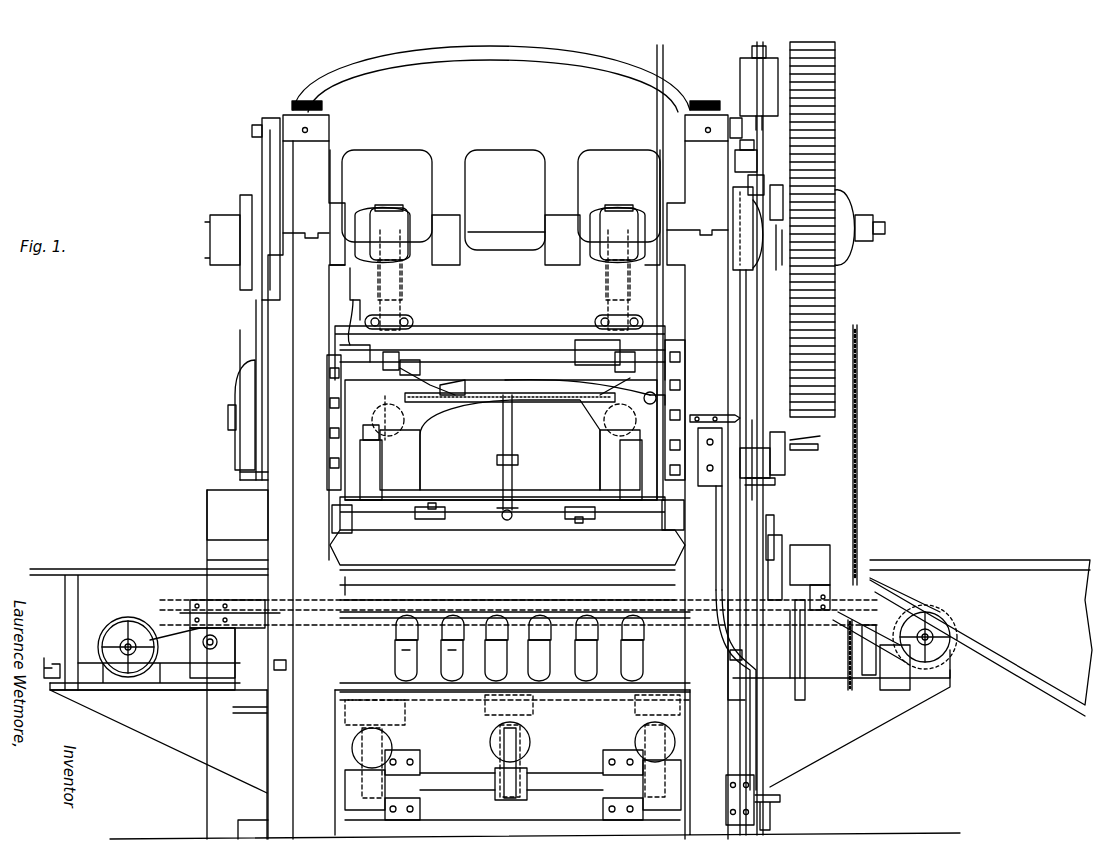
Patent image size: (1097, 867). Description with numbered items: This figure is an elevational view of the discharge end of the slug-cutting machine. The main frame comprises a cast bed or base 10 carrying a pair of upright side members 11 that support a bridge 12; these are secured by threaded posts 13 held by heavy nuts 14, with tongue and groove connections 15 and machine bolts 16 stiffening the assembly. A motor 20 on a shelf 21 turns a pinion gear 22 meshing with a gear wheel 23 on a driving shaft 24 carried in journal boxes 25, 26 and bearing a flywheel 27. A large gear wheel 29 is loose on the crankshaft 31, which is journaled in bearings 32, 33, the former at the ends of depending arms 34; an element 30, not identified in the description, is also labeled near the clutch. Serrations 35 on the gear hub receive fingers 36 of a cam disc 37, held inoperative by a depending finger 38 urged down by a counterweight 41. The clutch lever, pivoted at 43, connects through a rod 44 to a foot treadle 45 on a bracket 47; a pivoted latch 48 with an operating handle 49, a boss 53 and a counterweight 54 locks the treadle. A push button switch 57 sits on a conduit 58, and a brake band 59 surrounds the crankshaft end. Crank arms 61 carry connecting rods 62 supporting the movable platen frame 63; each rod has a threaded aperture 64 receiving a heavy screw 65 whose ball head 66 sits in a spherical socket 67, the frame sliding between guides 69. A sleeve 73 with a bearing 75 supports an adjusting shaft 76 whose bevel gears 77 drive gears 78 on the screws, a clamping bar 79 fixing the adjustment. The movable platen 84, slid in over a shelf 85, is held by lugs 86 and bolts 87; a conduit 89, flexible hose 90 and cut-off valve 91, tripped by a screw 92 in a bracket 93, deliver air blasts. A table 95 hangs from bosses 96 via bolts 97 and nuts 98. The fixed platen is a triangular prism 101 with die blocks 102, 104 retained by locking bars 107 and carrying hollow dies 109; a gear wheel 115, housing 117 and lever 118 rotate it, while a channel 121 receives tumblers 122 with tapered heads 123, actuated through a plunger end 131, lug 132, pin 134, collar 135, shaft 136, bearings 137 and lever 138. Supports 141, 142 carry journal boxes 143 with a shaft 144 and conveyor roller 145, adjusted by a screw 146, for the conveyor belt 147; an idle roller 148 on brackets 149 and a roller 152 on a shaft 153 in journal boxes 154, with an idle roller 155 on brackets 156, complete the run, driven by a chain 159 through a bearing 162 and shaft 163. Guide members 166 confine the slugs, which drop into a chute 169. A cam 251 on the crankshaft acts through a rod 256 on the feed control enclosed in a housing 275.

The bed or base 10 is at (535, 719).
The upright side members 11 is at (488, 685).
The bridge or upper frame section 12 is at (491, 155).
The threaded posts 13 is at (322, 106).
The heavy nuts 14 is at (329, 128).
The tongue and groove connections 15 is at (312, 233).
The machine bolts 16 is at (511, 650).
The motor 20 is at (245, 392).
The shelf 21 is at (240, 475).
The pinion gear 22 is at (405, 414).
The gear wheel 23 is at (361, 318).
The driving shaft 24 is at (507, 326).
The journal box 25 is at (575, 360).
The journal box 26 is at (690, 316).
The flywheel 27 is at (785, 430).
The gear wheel 29 is at (835, 148).
The arm 30 is at (718, 138).
The crankshaft 31 is at (507, 230).
The bearings 32 is at (545, 263).
The bearings 33 is at (345, 222).
The depending arms 34 is at (545, 176).
The serrations 35 is at (825, 268).
The fingers 36 is at (778, 265).
The cam disc 37 is at (745, 240).
The depending finger 38 is at (748, 186).
The counterweight 41 is at (740, 65).
The pivot 43 is at (735, 160).
The rod 44 is at (770, 500).
The foot treadle 45 is at (782, 799).
The bracket 47 is at (722, 790).
The pivoted latch 48 is at (790, 462).
The operating handle 49 is at (818, 447).
The boss 53 is at (790, 478).
The counterweight 54 is at (818, 430).
The push button switch 57 is at (710, 457).
The conduit 58 is at (735, 533).
The brake band 59 is at (262, 178).
The crank arms 61 is at (416, 220).
The connecting rods 62 is at (405, 295).
The movable platen frame 63 is at (501, 440).
The screw threaded aperture 64 is at (400, 313).
The heavy screw 65 is at (402, 352).
The ball head 66 is at (425, 445).
The spherical socket 67 is at (605, 438).
The guides 69 is at (327, 438).
The sleeve 73 is at (509, 365).
The bearing 75 is at (468, 420).
The adjusting shaft 76 is at (503, 362).
The bevel gears 77 is at (441, 390).
The gears 78 is at (490, 394).
The clamping bar 79 is at (413, 325).
The movable platen 84 is at (502, 513).
The shelf 85 is at (93, 569).
The lugs 86 is at (415, 512).
The bolts 87 is at (600, 518).
The conduit 89 is at (512, 448).
The flexible hose 90 is at (548, 405).
The cut-off valve 91 is at (630, 414).
The screw 92 is at (688, 386).
The bracket 93 is at (688, 410).
The table or stripper plate 95 is at (507, 540).
The apertured bosses 96 is at (365, 497).
The bolts 97 is at (332, 515).
The nuts 98 is at (379, 462).
The triangular prism 101 is at (523, 590).
The die block 102 is at (655, 610).
The die block 104 is at (515, 652).
The locking bars 107 is at (385, 683).
The hollow dies 109 is at (448, 678).
The gear wheel 115 is at (775, 520).
The housing 117 is at (785, 553).
The lever 118 is at (800, 700).
The tapered slot or channel 121 is at (445, 590).
The tumblers 122 is at (512, 717).
The tapered head 123 is at (380, 712).
The projecting end of plunger 131 is at (500, 740).
The upstanding lug 132 is at (640, 745).
The pin 134 is at (498, 747).
The collar 135 is at (513, 785).
The shaft 136 is at (462, 775).
The bearings 137 is at (410, 792).
The lever 138 is at (735, 710).
The conveyor support 141 is at (168, 745).
The conveyor support 142 is at (862, 733).
The journal boxes 143 is at (128, 675).
The shaft 144 is at (136, 647).
The conveyor roller 145 is at (123, 642).
The screw 146 is at (50, 658).
The conveyor belt 147 is at (138, 620).
The idle roller 148 is at (246, 655).
The bearing brackets 149 is at (208, 685).
The conveyor roller 152 is at (950, 655).
The shaft 153 is at (958, 637).
The journal boxes 154 is at (950, 670).
The idle roller 155 is at (815, 590).
The brackets 156 is at (820, 667).
The link belt or chain 159 is at (860, 432).
The bearing 162 is at (855, 670).
The shaft 163 is at (882, 644).
The belt guide members 166 is at (178, 615).
The hopper or chute 169 is at (1012, 560).
The cam 251 is at (245, 198).
The rod 256 is at (256, 323).
The housing 275 is at (215, 520).